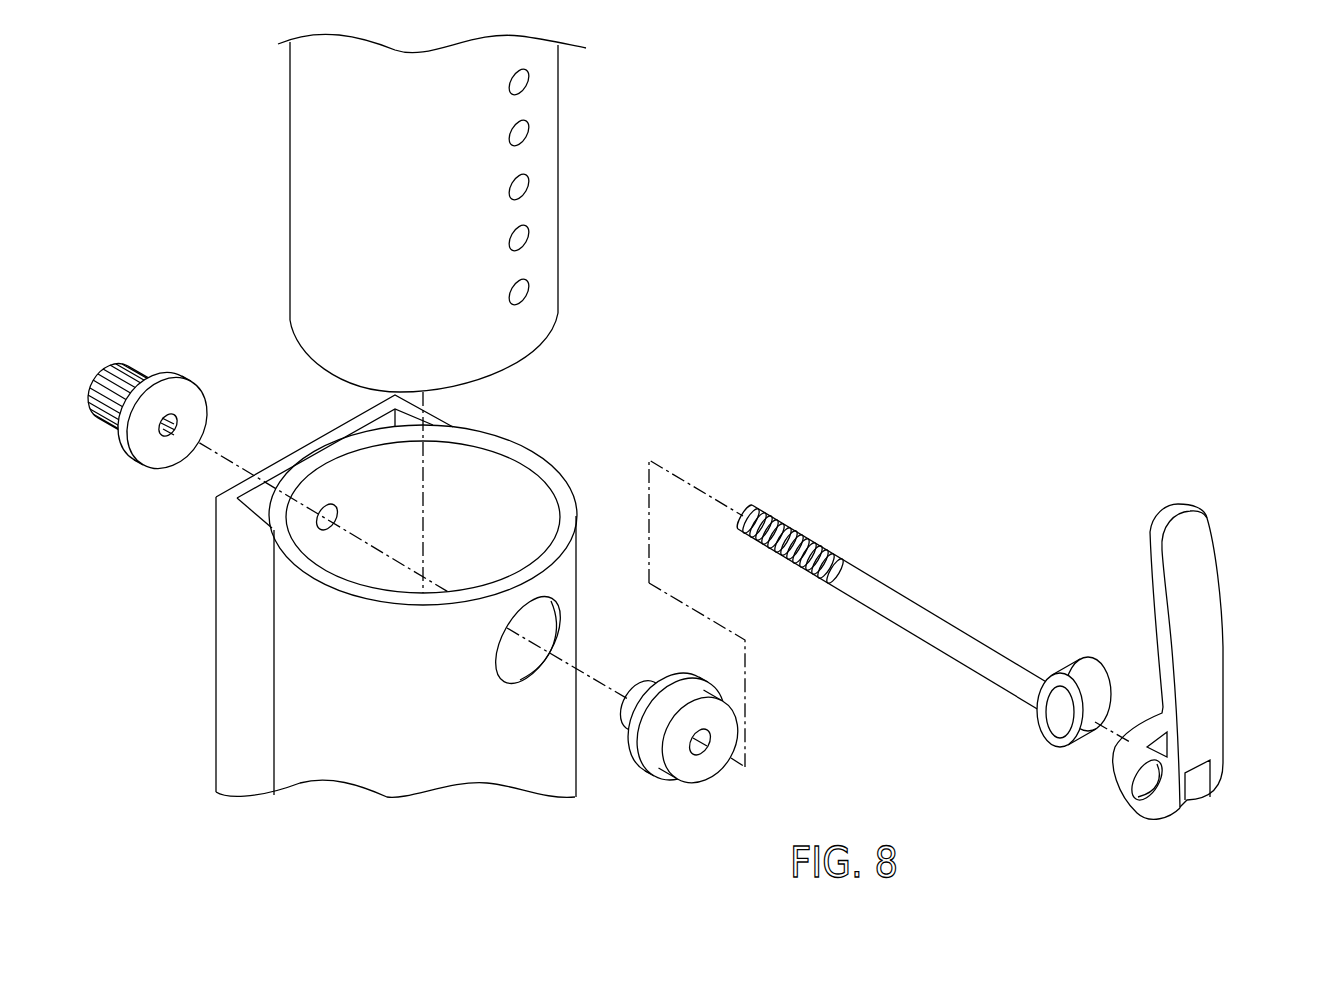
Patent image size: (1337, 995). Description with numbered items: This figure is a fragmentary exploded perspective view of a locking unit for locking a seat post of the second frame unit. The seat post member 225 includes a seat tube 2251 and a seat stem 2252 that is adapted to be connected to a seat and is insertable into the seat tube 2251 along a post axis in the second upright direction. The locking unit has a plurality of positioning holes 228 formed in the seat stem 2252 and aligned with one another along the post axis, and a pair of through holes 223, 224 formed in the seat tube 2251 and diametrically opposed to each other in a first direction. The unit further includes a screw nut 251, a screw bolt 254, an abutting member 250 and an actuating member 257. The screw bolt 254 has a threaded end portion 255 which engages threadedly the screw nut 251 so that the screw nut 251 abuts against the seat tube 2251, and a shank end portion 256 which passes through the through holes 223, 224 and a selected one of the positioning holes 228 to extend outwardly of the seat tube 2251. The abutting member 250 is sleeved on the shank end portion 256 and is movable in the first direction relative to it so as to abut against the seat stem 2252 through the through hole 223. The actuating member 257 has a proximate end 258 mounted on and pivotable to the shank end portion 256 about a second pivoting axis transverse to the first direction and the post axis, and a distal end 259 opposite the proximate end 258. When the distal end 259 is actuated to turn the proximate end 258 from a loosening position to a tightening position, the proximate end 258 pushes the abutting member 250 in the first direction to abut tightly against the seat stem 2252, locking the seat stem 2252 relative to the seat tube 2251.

The seat stem 2252 is at (434, 213).
The positioning holes 228 is at (528, 288).
The seat tube 2251 is at (438, 594).
The through hole 224 is at (335, 527).
The through hole 223 is at (510, 660).
The screw nut 251 is at (143, 370).
The abutting member 250 is at (683, 791).
The seat post member 225 is at (716, 376).
The screw bolt 254 is at (933, 628).
The threaded end portion 255 is at (822, 538).
The shank end portion 256 is at (998, 678).
The actuating member 257 is at (1210, 669).
The distal end 259 is at (1163, 523).
The proximate end 258 is at (1176, 808).